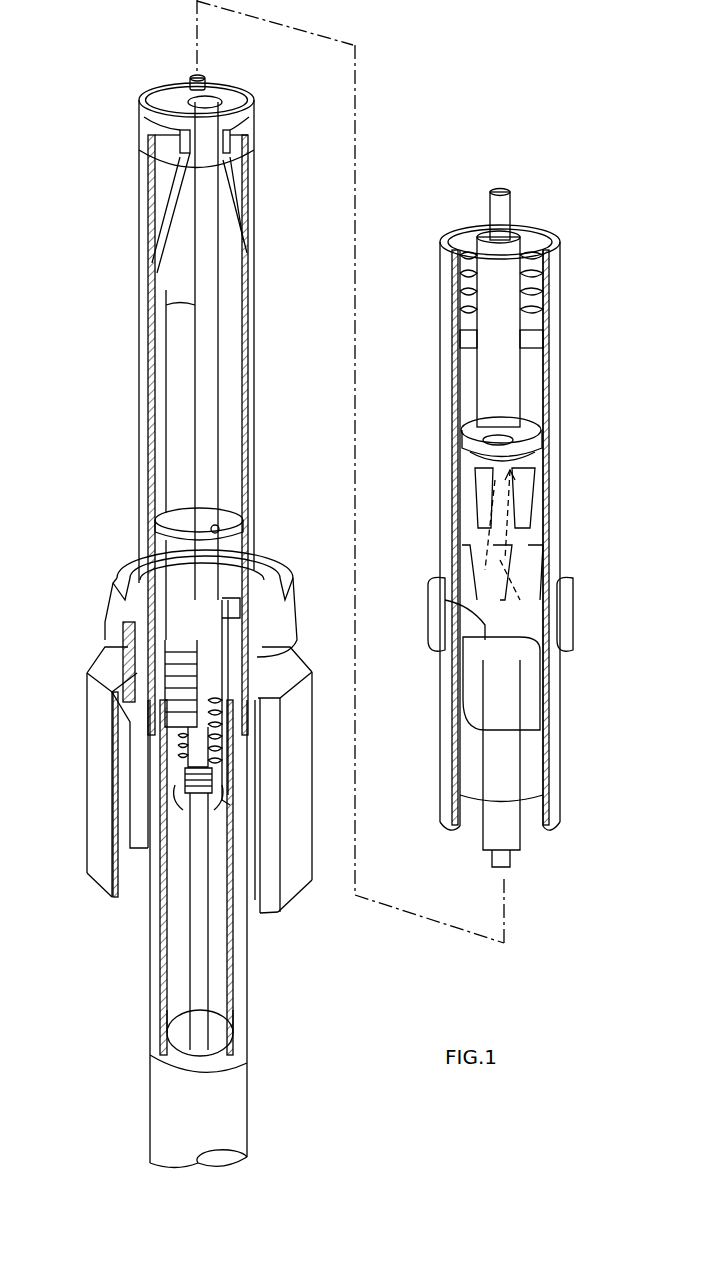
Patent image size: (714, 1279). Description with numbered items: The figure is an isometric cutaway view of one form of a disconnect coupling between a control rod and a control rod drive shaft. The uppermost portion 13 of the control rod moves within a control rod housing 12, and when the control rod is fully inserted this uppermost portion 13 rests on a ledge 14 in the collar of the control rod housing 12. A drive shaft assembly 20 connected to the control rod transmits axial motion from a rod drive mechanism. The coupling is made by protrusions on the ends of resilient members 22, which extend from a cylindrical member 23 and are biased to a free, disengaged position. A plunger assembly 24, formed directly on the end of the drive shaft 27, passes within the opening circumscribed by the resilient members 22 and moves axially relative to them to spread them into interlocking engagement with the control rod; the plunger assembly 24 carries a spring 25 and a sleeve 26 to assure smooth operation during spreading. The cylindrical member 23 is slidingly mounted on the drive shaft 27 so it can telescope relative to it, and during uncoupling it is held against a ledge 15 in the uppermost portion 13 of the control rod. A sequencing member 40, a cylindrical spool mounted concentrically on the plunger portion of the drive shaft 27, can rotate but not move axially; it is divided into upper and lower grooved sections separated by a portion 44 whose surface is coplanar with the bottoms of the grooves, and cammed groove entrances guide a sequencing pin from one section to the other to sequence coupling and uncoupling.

The control rod housing 12 is at (303, 843).
The uppermost portion of control rod 13 is at (230, 1018).
The ledge 14 is at (250, 657).
The ledge 15 is at (232, 612).
The drive shaft assembly 20 is at (298, 207).
The resilient members 22 is at (180, 397).
The cylindrical member 23 is at (258, 288).
The plunger assembly 24 is at (182, 763).
The spring 25 is at (193, 750).
The sleeve 26 is at (237, 803).
The drive shaft 27 is at (212, 115).
The sequencing member 40 is at (527, 613).
The portion of sequencing spool 44 is at (492, 530).